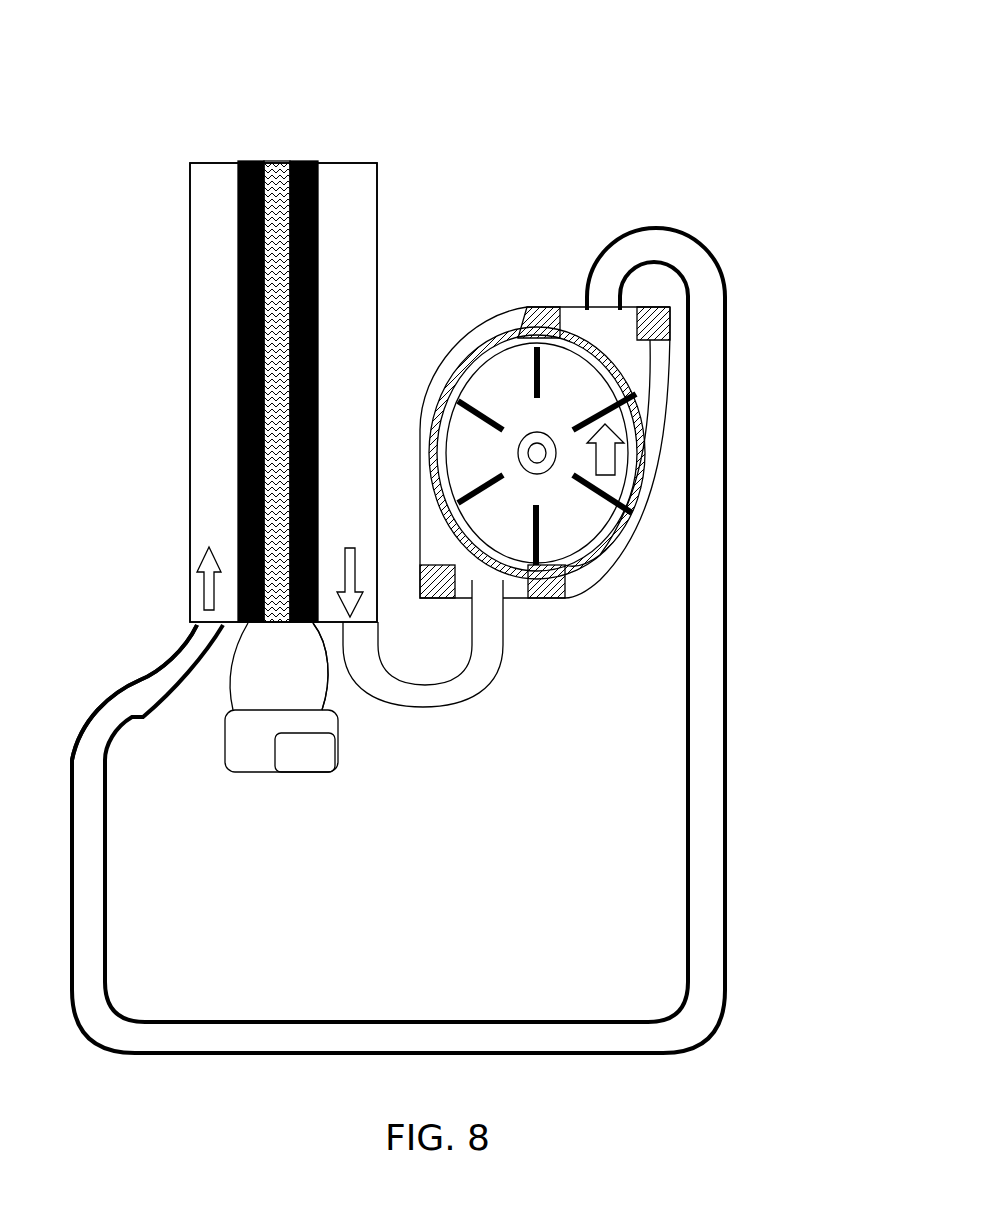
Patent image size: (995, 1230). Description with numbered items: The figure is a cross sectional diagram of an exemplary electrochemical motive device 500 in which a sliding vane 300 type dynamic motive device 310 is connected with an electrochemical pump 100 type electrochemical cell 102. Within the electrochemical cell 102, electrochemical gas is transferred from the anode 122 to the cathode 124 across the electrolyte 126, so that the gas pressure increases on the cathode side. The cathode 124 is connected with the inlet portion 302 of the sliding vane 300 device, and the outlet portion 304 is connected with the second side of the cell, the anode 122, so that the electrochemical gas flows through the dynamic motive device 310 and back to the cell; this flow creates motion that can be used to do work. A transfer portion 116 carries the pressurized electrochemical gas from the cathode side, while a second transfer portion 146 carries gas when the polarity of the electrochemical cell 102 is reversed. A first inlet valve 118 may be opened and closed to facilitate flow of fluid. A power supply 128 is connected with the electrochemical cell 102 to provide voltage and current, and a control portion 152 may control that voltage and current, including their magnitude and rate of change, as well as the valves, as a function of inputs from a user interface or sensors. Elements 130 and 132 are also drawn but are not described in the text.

The electrochemical pump 100 is at (180, 120).
The electrochemical cell 102 is at (326, 188).
The anode 122 is at (247, 160).
The electrolyte 126 is at (283, 160).
The cathode 124 is at (313, 160).
The electrochemical motive device 500 is at (606, 92).
The second transfer portion 146 is at (143, 680).
The filter outlet body 130 is at (228, 683).
The outlet housing 132 is at (327, 683).
The power supply 128 is at (266, 773).
The control portion 152 is at (300, 773).
The first inlet valve 118 is at (447, 659).
The transfer portion 116 is at (415, 698).
The sliding vane 300 is at (527, 307).
The outlet portion 304 is at (587, 307).
The dynamic motive device 310 is at (460, 333).
The inlet portion 302 is at (488, 580).